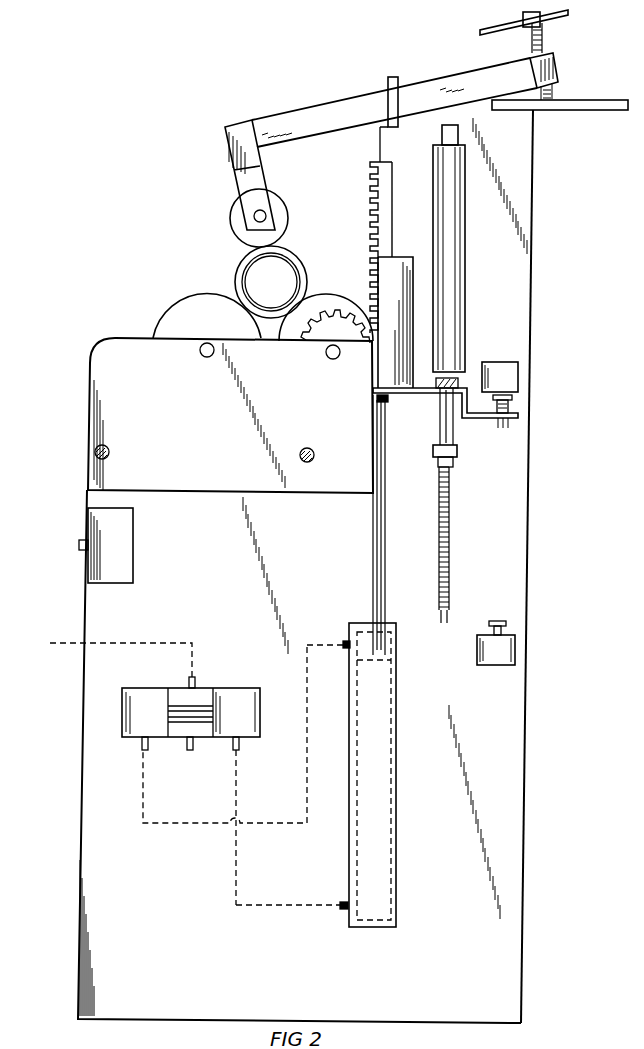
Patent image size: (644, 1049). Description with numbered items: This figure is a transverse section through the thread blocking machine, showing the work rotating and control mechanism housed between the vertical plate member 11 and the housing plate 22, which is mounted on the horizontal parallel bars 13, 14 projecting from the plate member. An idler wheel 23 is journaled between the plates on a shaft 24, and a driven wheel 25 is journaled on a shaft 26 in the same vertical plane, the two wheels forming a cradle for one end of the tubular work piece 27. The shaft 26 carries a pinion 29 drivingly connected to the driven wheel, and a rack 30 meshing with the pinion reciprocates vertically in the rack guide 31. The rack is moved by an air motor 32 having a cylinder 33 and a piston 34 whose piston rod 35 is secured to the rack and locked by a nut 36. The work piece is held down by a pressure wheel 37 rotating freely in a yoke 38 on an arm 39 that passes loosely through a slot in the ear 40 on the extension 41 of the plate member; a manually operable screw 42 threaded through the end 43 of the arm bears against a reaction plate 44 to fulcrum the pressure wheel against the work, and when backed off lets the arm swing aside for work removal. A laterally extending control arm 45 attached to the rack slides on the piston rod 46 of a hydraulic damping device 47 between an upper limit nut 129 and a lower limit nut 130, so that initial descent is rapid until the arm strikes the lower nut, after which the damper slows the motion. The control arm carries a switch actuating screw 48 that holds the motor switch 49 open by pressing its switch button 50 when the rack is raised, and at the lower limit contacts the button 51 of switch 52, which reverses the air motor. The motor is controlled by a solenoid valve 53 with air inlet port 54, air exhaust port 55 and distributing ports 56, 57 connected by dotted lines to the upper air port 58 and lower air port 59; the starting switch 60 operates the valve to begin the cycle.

The vertical plate member 11 is at (118, 866).
The horizontal parallel bar 13 is at (95, 452).
The horizontal parallel bar 14 is at (312, 451).
The housing plate 22 is at (108, 378).
The idler wheel 23 is at (175, 312).
The shaft 24 is at (204, 358).
The driven wheel 25 is at (322, 302).
The shaft 26 is at (330, 360).
The tubular work piece 27 is at (240, 270).
The pinion 29 is at (322, 330).
The rack 30 is at (374, 195).
The rack guide 31 is at (396, 270).
The air motor 32 is at (374, 780).
The cylinder 33 is at (375, 726).
The piston 34 is at (376, 657).
The piston rod 35 is at (375, 560).
The nut 36 is at (386, 400).
The pressure wheel 37 is at (236, 210).
The yoke 38 is at (245, 180).
The arm 39 is at (305, 118).
The ear 40 is at (393, 78).
The extension 41 is at (535, 200).
The manually operable screw 42 is at (545, 43).
The end 43 is at (556, 66).
The reaction plate 44 is at (600, 110).
The control arm 45 is at (432, 396).
The piston rod 46 is at (452, 430).
The hydraulic damping device 47 is at (446, 270).
The switch actuating screw 48 is at (510, 408).
The motor switch 49 is at (516, 372).
The switch button 50 is at (512, 397).
The button 51 is at (504, 623).
The switch 52 is at (500, 653).
The solenoid valve 53 is at (238, 702).
The air inlet port 54 is at (189, 680).
The air exhaust port 55 is at (190, 750).
The distributing port 56 is at (143, 740).
The distributing port 57 is at (240, 745).
The upper air port 58 is at (347, 641).
The lower air port 59 is at (340, 908).
The starting switch 60 is at (107, 560).
The upper limit nut 129 is at (458, 380).
The lower limit nut 130 is at (456, 455).